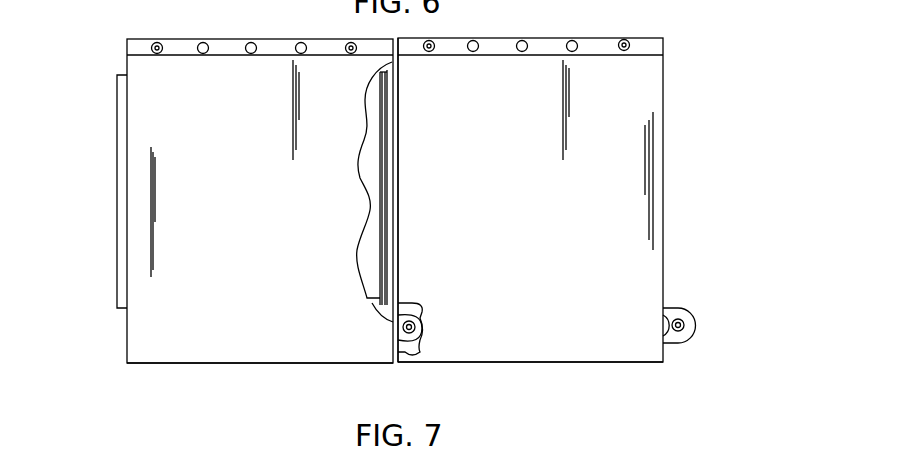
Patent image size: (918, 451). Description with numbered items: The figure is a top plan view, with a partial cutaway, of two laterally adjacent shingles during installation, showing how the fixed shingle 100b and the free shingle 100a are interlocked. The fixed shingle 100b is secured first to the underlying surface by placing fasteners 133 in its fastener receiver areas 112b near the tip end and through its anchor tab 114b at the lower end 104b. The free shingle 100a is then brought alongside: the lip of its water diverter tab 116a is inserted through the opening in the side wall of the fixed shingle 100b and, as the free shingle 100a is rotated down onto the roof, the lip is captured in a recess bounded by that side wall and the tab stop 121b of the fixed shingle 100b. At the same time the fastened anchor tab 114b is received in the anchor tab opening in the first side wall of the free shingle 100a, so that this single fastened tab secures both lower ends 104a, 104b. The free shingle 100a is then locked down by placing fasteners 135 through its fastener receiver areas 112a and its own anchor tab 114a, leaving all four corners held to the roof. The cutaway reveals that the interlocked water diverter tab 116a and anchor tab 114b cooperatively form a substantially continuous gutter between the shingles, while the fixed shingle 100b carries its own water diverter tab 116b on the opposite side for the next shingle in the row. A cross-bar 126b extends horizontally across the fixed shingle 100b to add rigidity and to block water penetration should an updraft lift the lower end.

The free shingle 100a is at (699, 236).
The fixed shingle 100b is at (104, 235).
The lower end of free shingle 104a is at (403, 363).
The lower end of fixed shingle 104b is at (370, 363).
The fastener receiver areas of free shingle 112a is at (575, 42).
The fastener receiver areas of fixed shingle 112b is at (200, 48).
The anchor tab of free shingle 114a is at (665, 318).
The anchor tab of fixed shingle 114b is at (425, 320).
The water diverter tab of free shingle 116a is at (393, 105).
The water diverter tab of fixed shingle 116b is at (121, 112).
The tab stop of fixed shingle 121b is at (380, 125).
The cross-bar of fixed shingle 126b is at (380, 298).
The fasteners 133 is at (152, 48).
The fasteners 135 is at (435, 47).